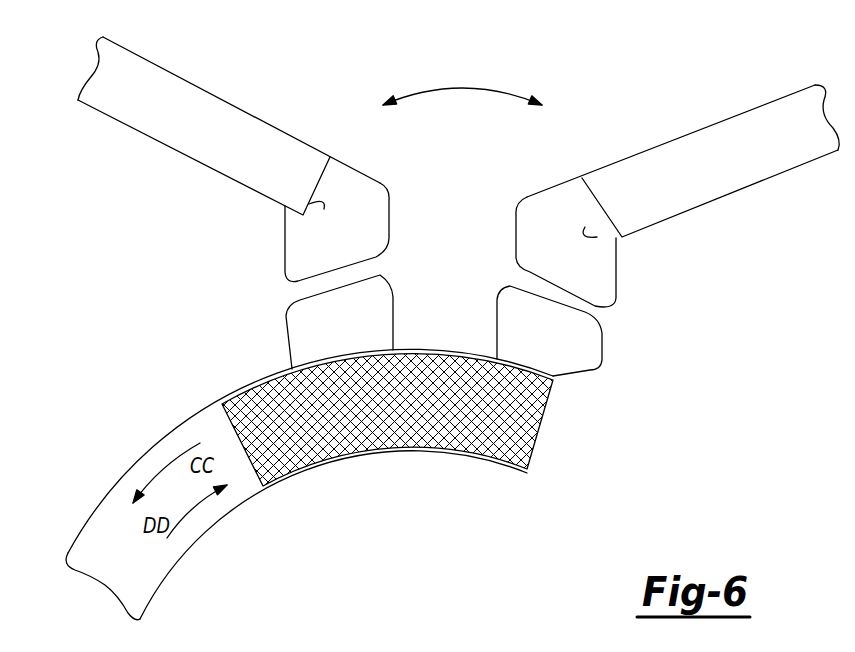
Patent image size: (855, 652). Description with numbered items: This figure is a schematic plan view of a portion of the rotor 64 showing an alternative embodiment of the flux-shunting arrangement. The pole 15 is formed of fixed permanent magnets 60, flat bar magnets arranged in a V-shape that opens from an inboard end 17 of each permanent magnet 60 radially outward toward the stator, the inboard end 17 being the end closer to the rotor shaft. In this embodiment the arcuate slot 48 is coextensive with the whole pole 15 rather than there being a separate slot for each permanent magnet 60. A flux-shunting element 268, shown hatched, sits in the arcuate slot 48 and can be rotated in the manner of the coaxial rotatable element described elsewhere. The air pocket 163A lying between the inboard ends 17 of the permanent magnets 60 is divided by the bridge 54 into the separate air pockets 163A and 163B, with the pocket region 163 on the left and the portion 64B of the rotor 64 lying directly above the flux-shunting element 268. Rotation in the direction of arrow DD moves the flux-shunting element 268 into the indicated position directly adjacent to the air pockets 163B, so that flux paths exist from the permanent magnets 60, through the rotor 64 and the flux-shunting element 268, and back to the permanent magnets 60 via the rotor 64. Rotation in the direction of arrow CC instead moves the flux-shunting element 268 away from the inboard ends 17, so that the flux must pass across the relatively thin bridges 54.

The pole 15 is at (462, 88).
The permanent magnet 60 is at (243, 130).
The air pocket 163A is at (362, 211).
The inboard end 17 is at (324, 209).
The rotor 64 is at (459, 264).
The air pocket 163 is at (307, 333).
The air pocket 163B is at (568, 358).
The bridge 54 is at (587, 310).
The rotor portion 64B is at (450, 317).
The arcuate slot 48 is at (110, 533).
The flux-shunting element 268 is at (425, 430).